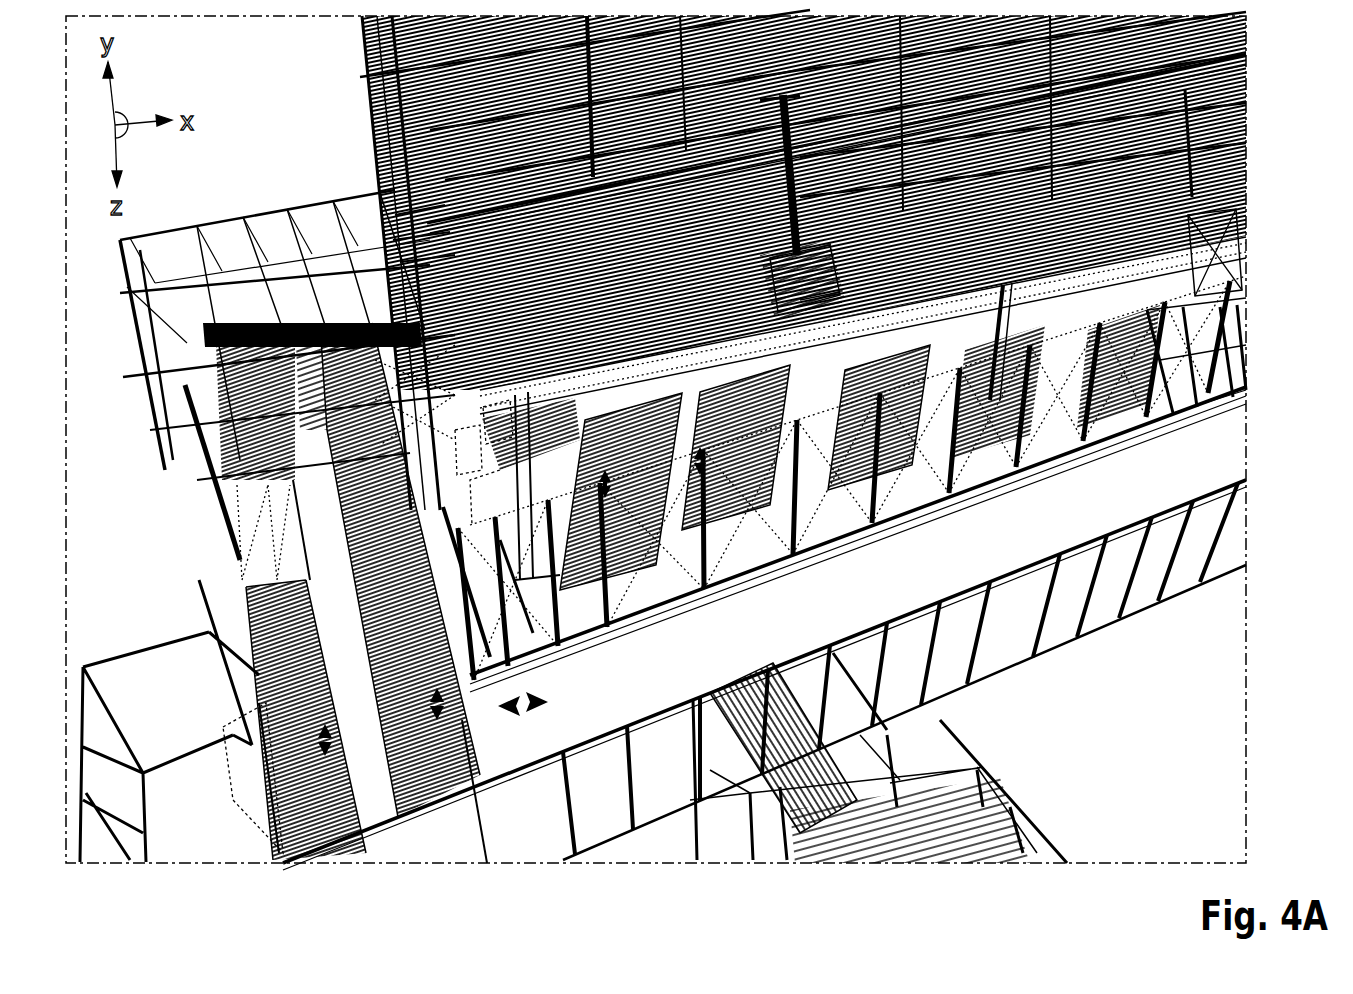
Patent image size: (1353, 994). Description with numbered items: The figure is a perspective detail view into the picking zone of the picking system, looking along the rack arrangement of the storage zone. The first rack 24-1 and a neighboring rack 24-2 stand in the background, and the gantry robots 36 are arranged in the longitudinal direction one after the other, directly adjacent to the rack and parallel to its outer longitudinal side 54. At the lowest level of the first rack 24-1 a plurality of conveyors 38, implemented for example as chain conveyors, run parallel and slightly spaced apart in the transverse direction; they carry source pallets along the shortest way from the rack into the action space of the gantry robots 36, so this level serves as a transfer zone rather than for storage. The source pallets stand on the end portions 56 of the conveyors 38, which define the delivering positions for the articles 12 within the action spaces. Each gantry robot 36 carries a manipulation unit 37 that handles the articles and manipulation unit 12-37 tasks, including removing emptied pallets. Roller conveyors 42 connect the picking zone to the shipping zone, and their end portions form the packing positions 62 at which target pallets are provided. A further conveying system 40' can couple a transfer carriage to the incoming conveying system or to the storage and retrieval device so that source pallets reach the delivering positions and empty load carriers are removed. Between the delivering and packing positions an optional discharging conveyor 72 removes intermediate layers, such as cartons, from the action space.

The first rack 24-1 is at (413, 78).
The rack 24-2 is at (366, 46).
The conveyors 38 is at (400, 262).
The gantry robots 36 is at (770, 160).
The outer longitudinal side 54 is at (1248, 58).
The packing positions 62 is at (1034, 298).
The articles and manipulation unit 12-37 is at (809, 301).
The articles 12 is at (803, 318).
The manipulation unit 37 is at (858, 320).
The end portions 56 is at (465, 345).
The discharging conveyor 72 is at (470, 472).
The further conveying system 40' is at (281, 375).
The roller conveyors 42 is at (683, 480).